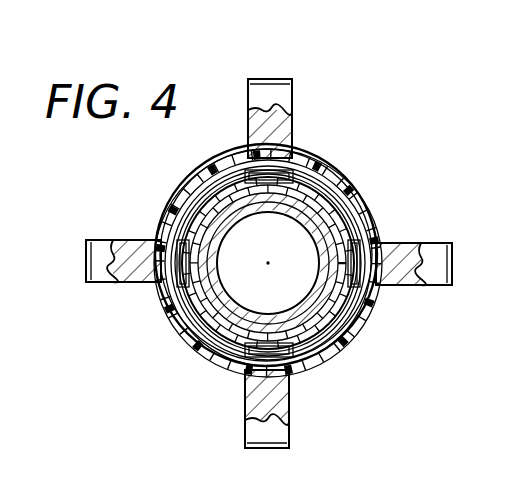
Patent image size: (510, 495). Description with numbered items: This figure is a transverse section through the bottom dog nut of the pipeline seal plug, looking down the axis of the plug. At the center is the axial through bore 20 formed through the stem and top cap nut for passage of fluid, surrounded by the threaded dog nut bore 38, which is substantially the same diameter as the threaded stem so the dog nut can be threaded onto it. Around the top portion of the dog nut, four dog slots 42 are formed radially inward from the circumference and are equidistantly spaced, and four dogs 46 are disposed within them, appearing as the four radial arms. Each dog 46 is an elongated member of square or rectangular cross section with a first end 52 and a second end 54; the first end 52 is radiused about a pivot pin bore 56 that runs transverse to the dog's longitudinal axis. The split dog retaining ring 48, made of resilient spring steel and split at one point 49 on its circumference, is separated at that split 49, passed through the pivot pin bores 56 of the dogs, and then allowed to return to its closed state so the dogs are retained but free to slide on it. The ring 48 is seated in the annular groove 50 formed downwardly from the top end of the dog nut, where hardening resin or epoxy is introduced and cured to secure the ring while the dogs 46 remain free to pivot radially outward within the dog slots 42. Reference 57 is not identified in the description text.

The axial through bore 20 is at (292, 223).
The dog nut bore 38 is at (206, 350).
The dog slots 42 is at (300, 152).
The dogs 46 is at (294, 94).
The dog retaining ring 48 is at (350, 350).
The split 49 is at (184, 340).
The annular groove 50 is at (330, 176).
The first end 52 is at (320, 154).
The second end 54 is at (268, 77).
The pivot pin bore 56 is at (252, 152).
The bearing ring 57 is at (178, 190).